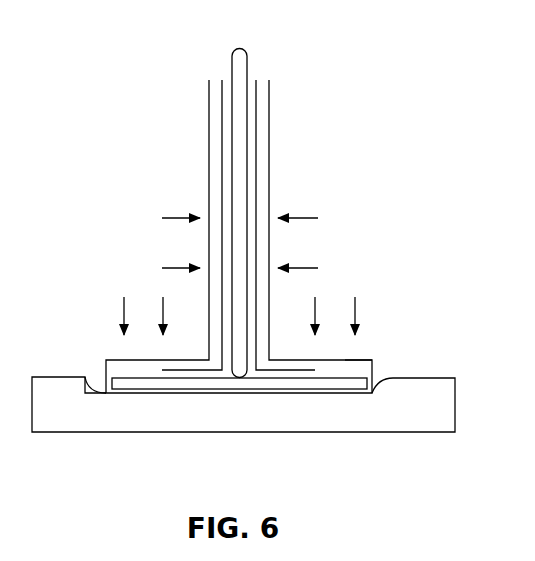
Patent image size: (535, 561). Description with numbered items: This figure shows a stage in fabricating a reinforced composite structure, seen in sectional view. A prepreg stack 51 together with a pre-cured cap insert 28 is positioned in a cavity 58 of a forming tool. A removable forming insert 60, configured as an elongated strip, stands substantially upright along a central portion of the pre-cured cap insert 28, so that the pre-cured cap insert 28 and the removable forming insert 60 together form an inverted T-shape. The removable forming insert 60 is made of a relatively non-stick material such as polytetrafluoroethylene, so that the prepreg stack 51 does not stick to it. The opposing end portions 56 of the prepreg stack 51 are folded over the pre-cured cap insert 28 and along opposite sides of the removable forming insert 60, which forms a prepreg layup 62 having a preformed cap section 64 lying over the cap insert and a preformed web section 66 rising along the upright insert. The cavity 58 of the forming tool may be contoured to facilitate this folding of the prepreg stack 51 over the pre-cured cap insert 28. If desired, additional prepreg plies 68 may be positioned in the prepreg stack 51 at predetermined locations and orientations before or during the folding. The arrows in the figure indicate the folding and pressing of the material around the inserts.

The pre-cured cap insert 28 is at (241, 58).
The prepreg stack 51 is at (118, 359).
The opposing end portions 56 is at (209, 176).
The cavity 58 is at (377, 392).
The removable forming insert 60 is at (245, 136).
The prepreg layup 62 is at (209, 210).
The preformed cap section 64 is at (345, 360).
The preformed web section 66 is at (270, 307).
The additional prepreg plies 68 is at (222, 138).